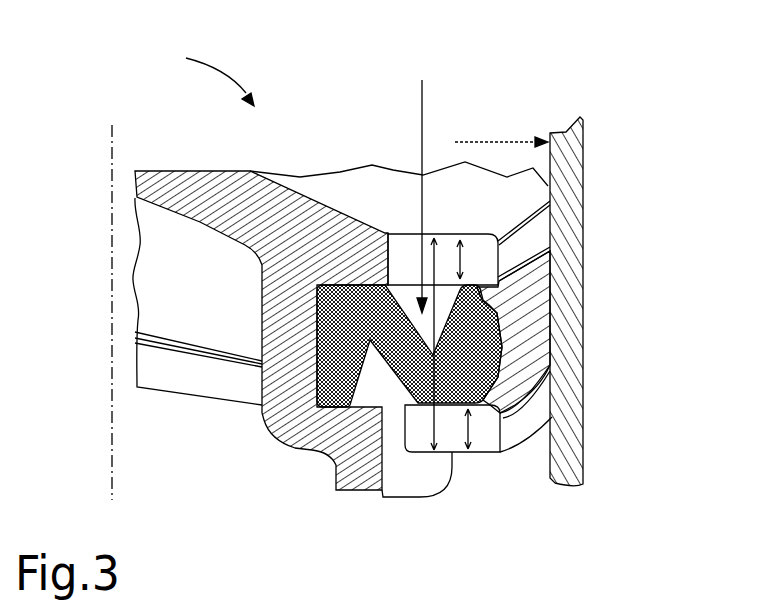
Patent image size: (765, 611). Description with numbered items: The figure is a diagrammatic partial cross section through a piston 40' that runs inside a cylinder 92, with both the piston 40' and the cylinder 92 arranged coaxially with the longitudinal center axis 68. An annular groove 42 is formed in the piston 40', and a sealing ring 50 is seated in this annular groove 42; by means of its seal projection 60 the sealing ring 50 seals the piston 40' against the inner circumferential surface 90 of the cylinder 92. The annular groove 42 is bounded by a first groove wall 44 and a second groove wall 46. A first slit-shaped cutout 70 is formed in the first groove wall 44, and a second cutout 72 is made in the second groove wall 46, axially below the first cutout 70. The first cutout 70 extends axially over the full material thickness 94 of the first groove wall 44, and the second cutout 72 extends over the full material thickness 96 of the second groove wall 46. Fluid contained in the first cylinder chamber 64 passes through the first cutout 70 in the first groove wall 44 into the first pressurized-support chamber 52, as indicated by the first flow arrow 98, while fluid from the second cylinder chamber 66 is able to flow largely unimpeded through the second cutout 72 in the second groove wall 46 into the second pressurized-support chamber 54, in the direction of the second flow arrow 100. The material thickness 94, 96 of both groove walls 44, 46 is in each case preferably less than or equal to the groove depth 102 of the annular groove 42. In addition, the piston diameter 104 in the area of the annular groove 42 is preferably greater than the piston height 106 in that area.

The piston 40' is at (201, 75).
The annular groove 42 is at (312, 328).
The first groove wall 44 is at (358, 205).
The second groove wall 46 is at (483, 453).
The sealing ring 50 is at (350, 388).
The first pressurized-support chamber 52 is at (443, 322).
The second pressurized-support chamber 54 is at (370, 370).
The seal projection 60 is at (480, 333).
The first cylinder chamber 64 is at (227, 157).
The second cylinder chamber 66 is at (232, 459).
The longitudinal center axis 68 is at (112, 184).
The first slit-shaped cutout 70 is at (407, 243).
The second cutout 72 is at (487, 442).
The inner circumferential surface 90 is at (550, 452).
The cylinder 92 is at (584, 199).
The material thickness 94 is at (460, 256).
The material thickness 96 is at (468, 430).
The first flow arrow 98 is at (422, 108).
The second flow arrow 100 is at (393, 395).
The groove depth 102 is at (368, 405).
The piston diameter 104 is at (522, 142).
The piston height 106 is at (456, 453).